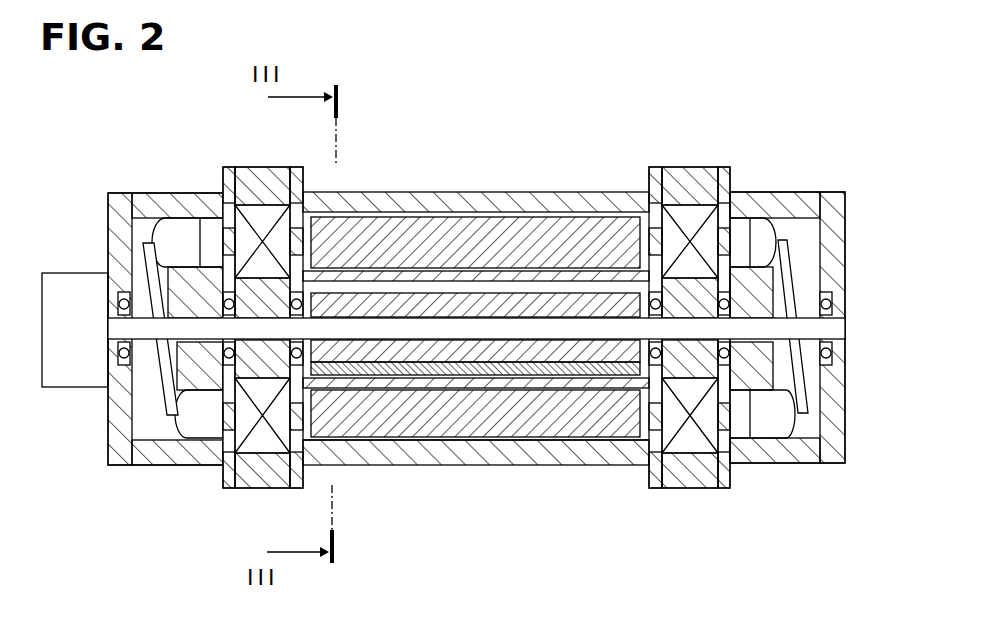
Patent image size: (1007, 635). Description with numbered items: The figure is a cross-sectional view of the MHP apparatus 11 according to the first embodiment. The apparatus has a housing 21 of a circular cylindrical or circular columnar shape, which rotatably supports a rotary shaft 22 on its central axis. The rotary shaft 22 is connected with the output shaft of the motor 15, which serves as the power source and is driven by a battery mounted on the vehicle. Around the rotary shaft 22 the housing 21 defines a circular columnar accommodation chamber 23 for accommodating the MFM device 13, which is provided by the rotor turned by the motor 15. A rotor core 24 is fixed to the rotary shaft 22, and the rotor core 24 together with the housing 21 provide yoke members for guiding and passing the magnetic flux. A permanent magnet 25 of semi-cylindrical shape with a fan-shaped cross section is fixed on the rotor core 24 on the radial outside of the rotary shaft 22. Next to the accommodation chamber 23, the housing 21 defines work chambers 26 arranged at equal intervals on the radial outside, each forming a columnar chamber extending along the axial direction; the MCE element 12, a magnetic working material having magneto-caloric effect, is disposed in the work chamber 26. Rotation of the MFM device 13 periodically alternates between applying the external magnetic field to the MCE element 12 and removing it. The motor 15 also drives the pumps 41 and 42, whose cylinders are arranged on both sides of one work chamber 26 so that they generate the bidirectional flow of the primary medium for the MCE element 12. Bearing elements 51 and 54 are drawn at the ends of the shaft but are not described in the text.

The MHP apparatus 11 is at (410, 165).
The MCE element 12 is at (500, 217).
The MFM device 13 is at (573, 293).
The motor 15 is at (83, 272).
The housing 21 is at (370, 455).
The rotary shaft 22 is at (412, 330).
The accommodation chamber 23 is at (440, 362).
The rotor core 24 is at (488, 352).
The permanent magnet 25 is at (533, 366).
The work chamber 26 is at (570, 443).
The pump 41 is at (783, 463).
The pump 42 is at (168, 465).
The rear bearing 51 is at (708, 168).
The front bearing 54 is at (247, 168).